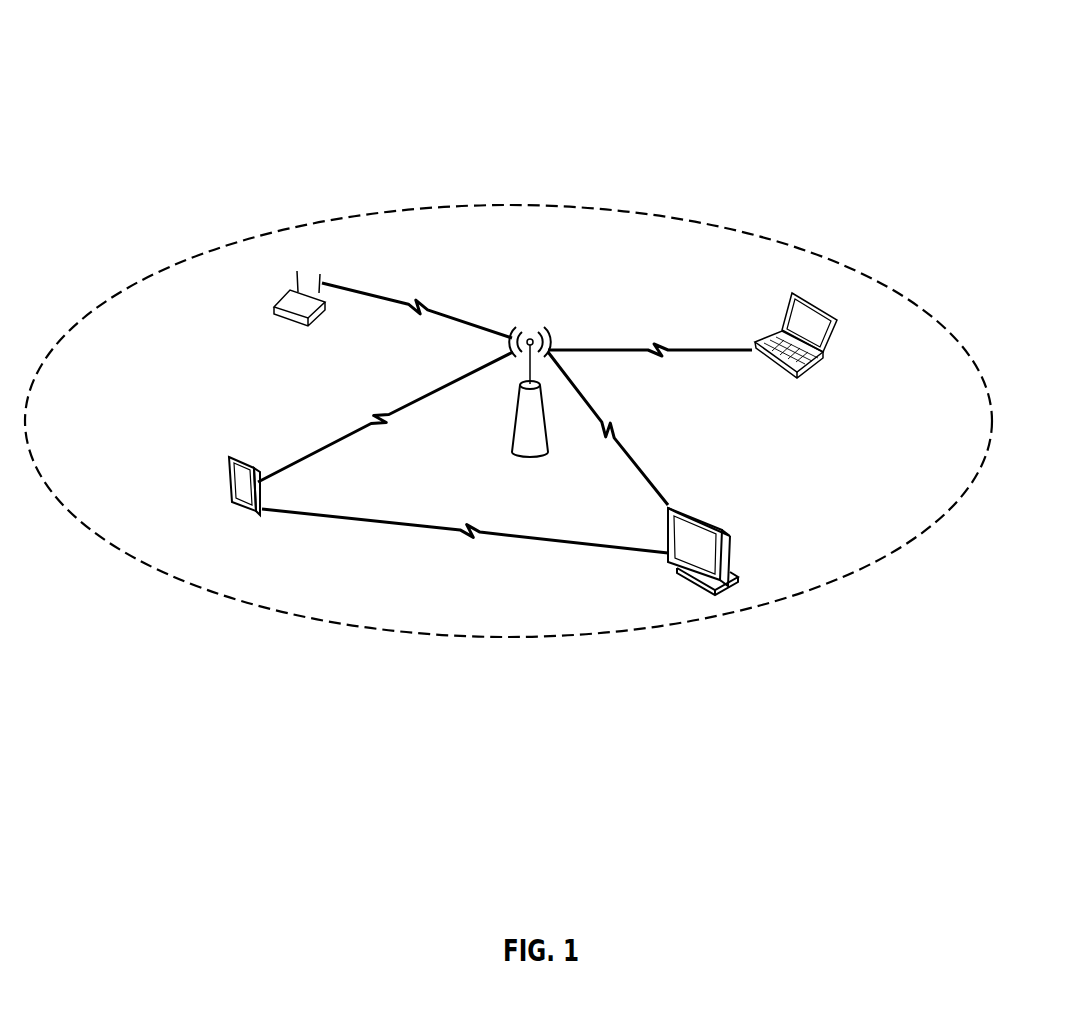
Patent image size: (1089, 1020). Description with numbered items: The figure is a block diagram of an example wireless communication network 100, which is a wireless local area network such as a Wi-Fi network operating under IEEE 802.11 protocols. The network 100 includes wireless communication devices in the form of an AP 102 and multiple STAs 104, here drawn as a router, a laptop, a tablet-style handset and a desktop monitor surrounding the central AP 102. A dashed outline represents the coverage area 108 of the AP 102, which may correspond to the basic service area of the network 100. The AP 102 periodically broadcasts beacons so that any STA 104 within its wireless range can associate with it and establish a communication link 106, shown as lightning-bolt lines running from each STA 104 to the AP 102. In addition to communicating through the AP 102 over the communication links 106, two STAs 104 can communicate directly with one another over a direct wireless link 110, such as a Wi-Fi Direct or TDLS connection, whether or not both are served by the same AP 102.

The wireless communication network 100 is at (998, 98).
The AP 102 is at (530, 455).
The STAs 104 is at (273, 300).
The communication link 106 is at (420, 303).
The coverage area 108 is at (97, 540).
The direct wireless link 110 is at (466, 537).